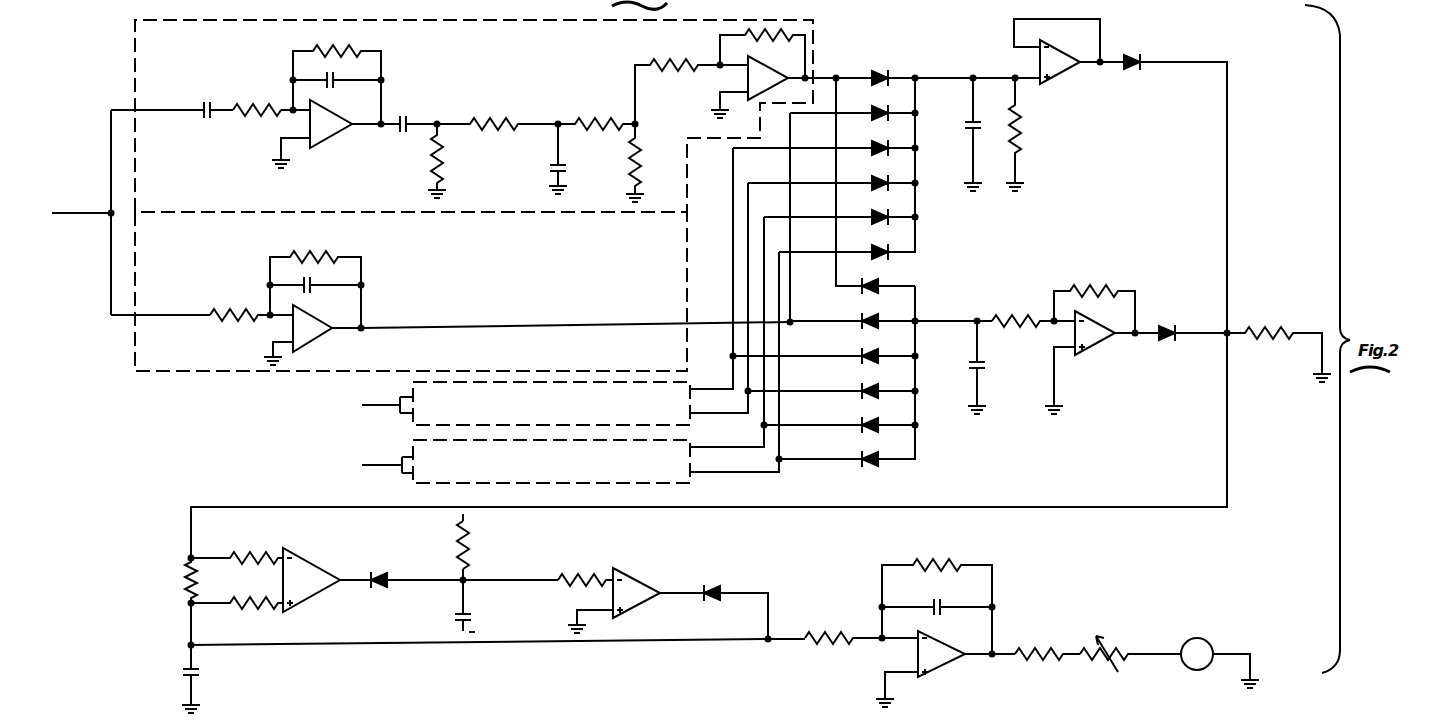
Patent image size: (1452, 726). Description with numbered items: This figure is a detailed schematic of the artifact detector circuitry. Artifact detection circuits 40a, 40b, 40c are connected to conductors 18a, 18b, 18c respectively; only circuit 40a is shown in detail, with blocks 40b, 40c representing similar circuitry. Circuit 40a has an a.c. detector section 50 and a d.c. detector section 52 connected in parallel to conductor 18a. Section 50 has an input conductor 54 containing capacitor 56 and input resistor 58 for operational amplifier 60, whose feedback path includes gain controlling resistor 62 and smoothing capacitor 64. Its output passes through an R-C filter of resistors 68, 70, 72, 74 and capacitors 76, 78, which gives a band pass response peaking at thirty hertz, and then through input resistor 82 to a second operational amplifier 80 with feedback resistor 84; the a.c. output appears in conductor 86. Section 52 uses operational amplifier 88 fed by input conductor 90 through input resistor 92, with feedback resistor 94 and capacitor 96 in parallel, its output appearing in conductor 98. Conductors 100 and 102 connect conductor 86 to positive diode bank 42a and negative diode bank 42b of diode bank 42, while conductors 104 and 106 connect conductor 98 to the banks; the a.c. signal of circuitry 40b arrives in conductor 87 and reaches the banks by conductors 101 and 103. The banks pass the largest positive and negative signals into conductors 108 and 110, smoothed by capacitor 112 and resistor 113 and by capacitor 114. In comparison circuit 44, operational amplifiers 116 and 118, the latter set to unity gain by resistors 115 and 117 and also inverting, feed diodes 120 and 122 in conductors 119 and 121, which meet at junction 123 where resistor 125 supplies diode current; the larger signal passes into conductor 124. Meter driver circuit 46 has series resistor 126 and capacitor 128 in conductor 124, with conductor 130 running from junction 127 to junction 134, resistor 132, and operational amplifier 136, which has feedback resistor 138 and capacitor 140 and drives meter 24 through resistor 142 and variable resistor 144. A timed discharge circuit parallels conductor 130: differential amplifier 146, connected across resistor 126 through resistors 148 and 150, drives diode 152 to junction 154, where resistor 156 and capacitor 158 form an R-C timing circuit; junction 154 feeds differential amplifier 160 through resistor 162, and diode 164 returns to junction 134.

The conductor 18a is at (60, 196).
The conductor 18b is at (362, 408).
The conductor 18c is at (368, 468).
The meter 24 is at (1186, 673).
The artifact detection circuit 40a is at (474, 185).
The artifact detection circuitry 40b is at (554, 413).
The artifact detection circuit 40c is at (559, 469).
The diode bank 42 is at (829, 254).
The positive diode bank 42a is at (918, 210).
The negative diode bank 42b is at (918, 426).
The comparison circuit 44 is at (1086, 323).
The meter driver circuit 46 is at (663, 591).
The a.c. detector section 50 is at (497, 25).
The d.c. detector section 52 is at (523, 371).
The input conductor 54 is at (172, 112).
The capacitor 56 is at (210, 102).
The input resistor 58 is at (257, 103).
The operational amplifier 60 is at (336, 140).
The gain controlling resistor 62 is at (336, 52).
The signal smoothing and stabilizing capacitor 64 is at (338, 89).
The resistor 68 is at (430, 160).
The resistor 70 is at (498, 118).
The resistor 72 is at (584, 128).
The resistor 74 is at (641, 157).
The capacitor 76 is at (404, 115).
The capacitor 78 is at (549, 168).
The second operational amplifier 80 is at (760, 66).
The input resistor 82 is at (678, 62).
The feedback resistor 84 is at (762, 32).
The conductor 86 is at (832, 78).
The conductor 87 is at (724, 374).
The operational amplifier 88 is at (310, 340).
The input conductor 90 is at (170, 312).
The input resistor 92 is at (238, 312).
The feedback resistor 94 is at (332, 256).
The capacitor 96 is at (312, 290).
The conductor 98 is at (484, 326).
The conductor 100 is at (864, 72).
The conductor 101 is at (732, 336).
The conductor 102 is at (840, 268).
The conductor 103 is at (822, 360).
The conductor 104 is at (870, 111).
The conductor 106 is at (825, 320).
The conductor 108 is at (962, 68).
The conductor 110 is at (972, 318).
The capacitor 112 is at (970, 123).
The resistor 113 is at (1015, 125).
The capacitor 114 is at (986, 364).
The resistor 115 is at (1010, 308).
The operational amplifier 116 is at (1049, 89).
The resistor 117 is at (1098, 288).
The operational amplifier 118 is at (1082, 357).
The conductor 119 is at (1166, 62).
The diode 120 is at (1132, 54).
The conductor 121 is at (1190, 342).
The diode 122 is at (1159, 324).
The junction 123 is at (1233, 338).
The conductor 124 is at (1098, 507).
The resistor 125 is at (1270, 320).
The resistor 126 is at (184, 572).
The junction 127 is at (188, 645).
The capacitor 128 is at (202, 670).
The conductor 130 is at (504, 648).
The resistor 132 is at (815, 638).
The junction 134 is at (766, 644).
The operational amplifier 136 is at (944, 671).
The resistor 138 is at (958, 563).
The capacitor 140 is at (942, 607).
The resistor 142 is at (1034, 651).
The variable resistor 144 is at (1118, 649).
The differential amplifier 146 is at (310, 568).
The resistor 148 is at (248, 554).
The resistor 150 is at (258, 602).
The diode 152 is at (386, 572).
The junction 154 is at (466, 575).
The resistor 156 is at (469, 550).
The capacitor 158 is at (469, 610).
The differential amplifier 160 is at (638, 609).
The resistor 162 is at (564, 576).
The diode 164 is at (710, 606).